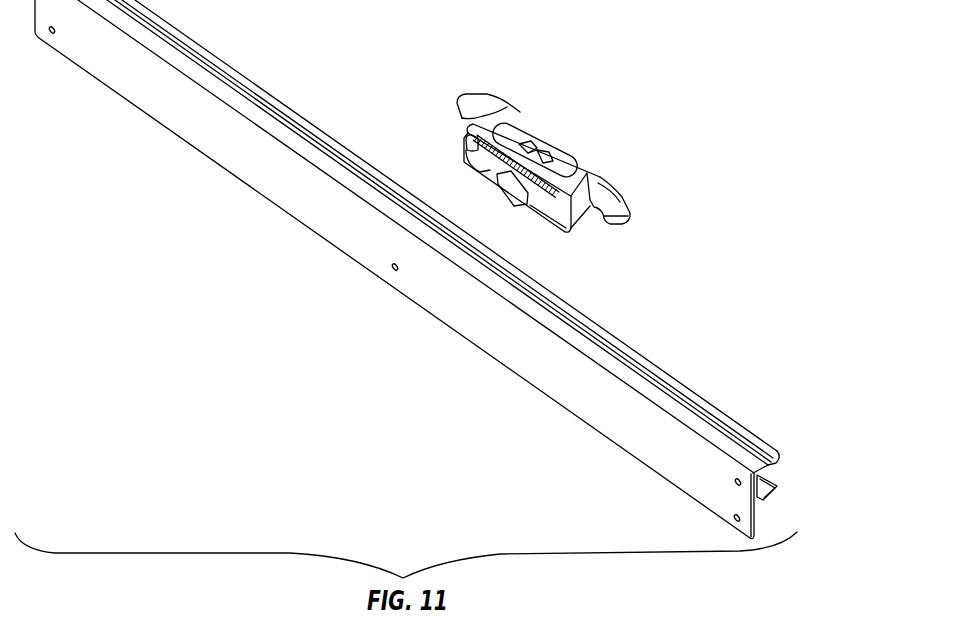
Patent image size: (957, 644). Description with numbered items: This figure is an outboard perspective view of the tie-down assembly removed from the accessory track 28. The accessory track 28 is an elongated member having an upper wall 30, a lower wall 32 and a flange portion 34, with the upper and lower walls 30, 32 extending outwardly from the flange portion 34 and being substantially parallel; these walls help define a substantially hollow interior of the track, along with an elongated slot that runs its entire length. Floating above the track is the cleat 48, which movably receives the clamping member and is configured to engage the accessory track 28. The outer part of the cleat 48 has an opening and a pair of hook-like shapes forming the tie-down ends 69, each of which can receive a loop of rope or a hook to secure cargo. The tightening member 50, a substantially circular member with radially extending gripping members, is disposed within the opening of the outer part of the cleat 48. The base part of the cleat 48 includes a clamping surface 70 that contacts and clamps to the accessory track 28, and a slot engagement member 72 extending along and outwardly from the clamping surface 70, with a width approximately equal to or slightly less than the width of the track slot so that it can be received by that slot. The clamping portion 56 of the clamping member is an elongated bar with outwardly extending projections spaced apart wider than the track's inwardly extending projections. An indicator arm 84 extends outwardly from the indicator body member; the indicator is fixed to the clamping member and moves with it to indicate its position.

The accessory track 28 is at (433, 269).
The upper wall 30 is at (698, 403).
The lower wall 32 is at (767, 495).
The flange portion 34 is at (757, 524).
The cleat 48 is at (544, 158).
The tightening member 50 is at (552, 166).
The clamping portion 56 is at (515, 192).
The tie-down ends 69 is at (459, 108).
The clamping surface 70 is at (466, 133).
The slot engagement member 72 is at (488, 164).
The indicator arm 84 is at (523, 146).